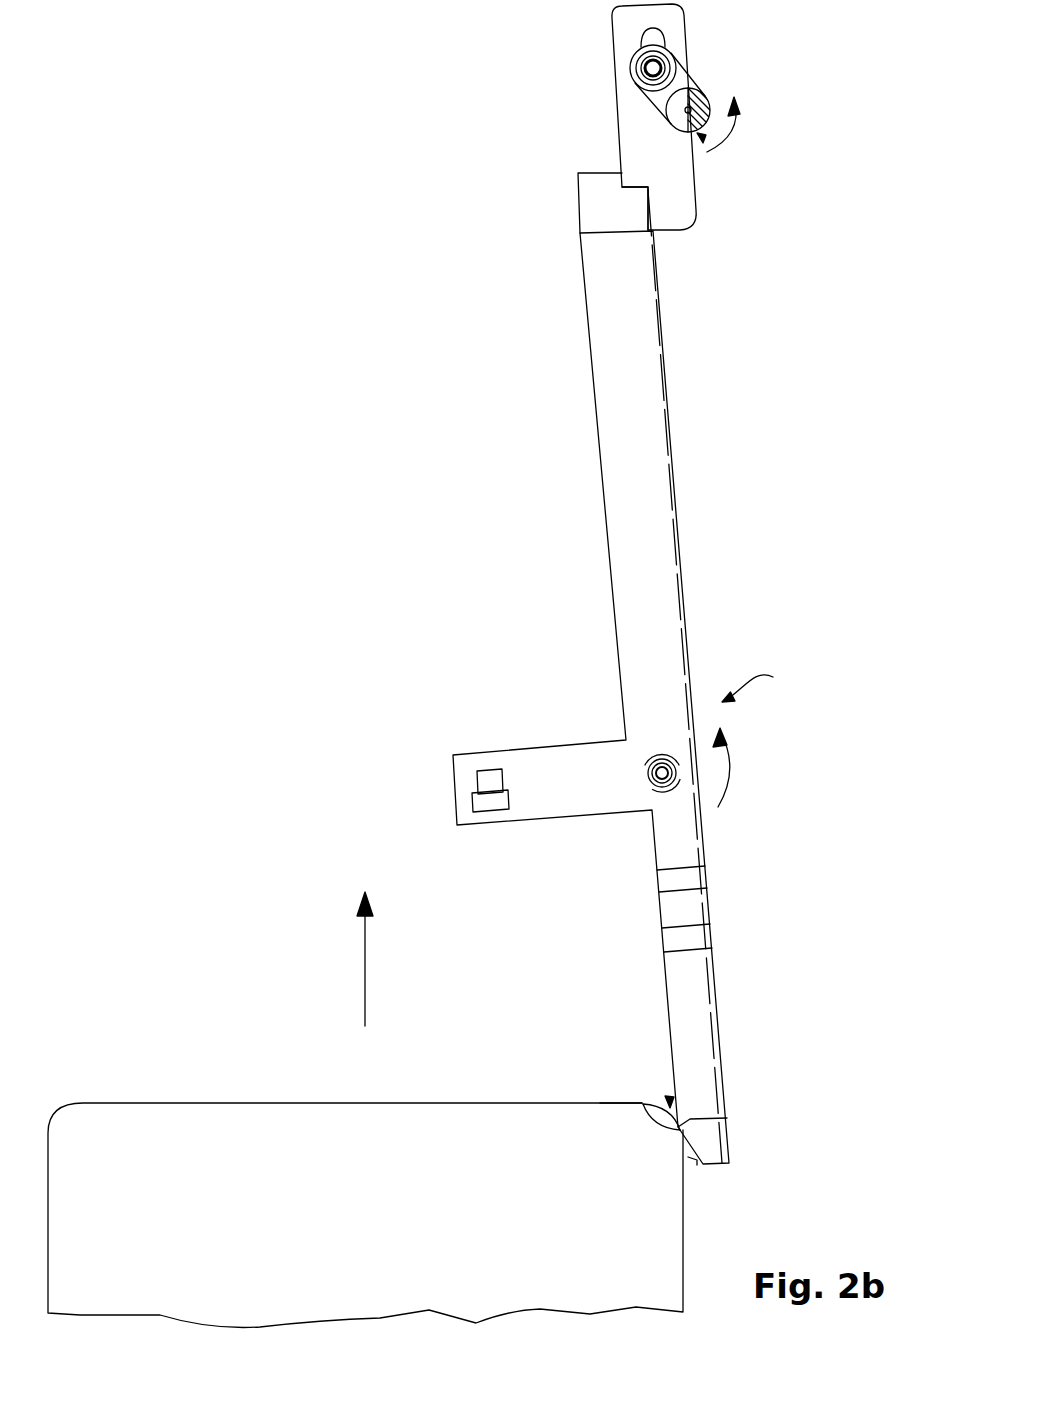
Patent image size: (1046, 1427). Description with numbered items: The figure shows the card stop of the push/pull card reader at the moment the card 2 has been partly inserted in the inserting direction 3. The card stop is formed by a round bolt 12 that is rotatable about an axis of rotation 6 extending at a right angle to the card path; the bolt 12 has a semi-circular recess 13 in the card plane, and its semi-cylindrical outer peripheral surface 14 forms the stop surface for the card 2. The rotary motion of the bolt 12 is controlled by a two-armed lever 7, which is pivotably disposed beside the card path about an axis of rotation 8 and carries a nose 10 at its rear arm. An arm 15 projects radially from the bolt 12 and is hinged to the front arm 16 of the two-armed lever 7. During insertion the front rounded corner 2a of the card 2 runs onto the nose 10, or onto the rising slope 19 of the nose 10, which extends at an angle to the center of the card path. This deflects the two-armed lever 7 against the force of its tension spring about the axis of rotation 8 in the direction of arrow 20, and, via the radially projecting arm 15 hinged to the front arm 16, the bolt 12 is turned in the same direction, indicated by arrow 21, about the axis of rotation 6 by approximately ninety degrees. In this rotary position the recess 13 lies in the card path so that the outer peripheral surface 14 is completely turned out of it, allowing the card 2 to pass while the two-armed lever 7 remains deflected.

The card 2 is at (168, 1112).
The front rounded corner 2a is at (668, 1098).
The inserting direction 3 is at (365, 970).
The axis of rotation 6 is at (675, 117).
The two-armed lever 7 is at (758, 681).
The axis of rotation 8 is at (662, 780).
The nose 10 is at (643, 1104).
The round bolt 12 is at (712, 100).
The semi-circular recess 13 is at (674, 114).
The outer peripheral surface 14 is at (692, 138).
The arm 15 is at (676, 78).
The front arm 16 is at (613, 398).
The rising slope 19 is at (693, 1162).
The arrow 20 is at (730, 770).
The arrow 21 is at (730, 130).